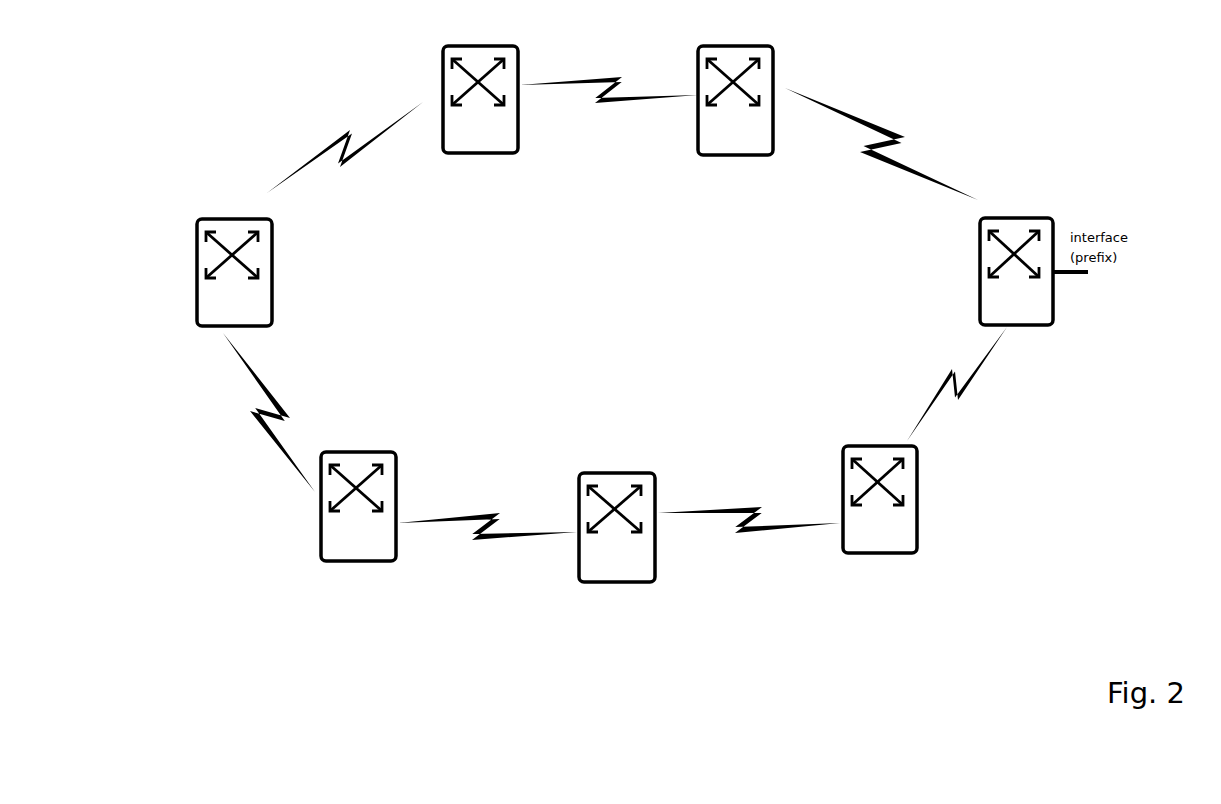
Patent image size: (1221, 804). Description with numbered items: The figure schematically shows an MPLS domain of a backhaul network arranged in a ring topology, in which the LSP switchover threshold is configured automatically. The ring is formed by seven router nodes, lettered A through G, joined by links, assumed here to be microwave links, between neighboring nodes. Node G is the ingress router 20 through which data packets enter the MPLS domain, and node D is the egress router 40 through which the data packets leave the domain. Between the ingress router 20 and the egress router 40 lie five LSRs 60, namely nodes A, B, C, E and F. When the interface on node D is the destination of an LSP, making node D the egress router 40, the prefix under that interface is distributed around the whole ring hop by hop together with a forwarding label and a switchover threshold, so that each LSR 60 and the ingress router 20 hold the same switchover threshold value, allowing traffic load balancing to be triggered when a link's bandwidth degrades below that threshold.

The ingress router 20 is at (318, 518).
The egress router 40 is at (1035, 214).
The label switching routers (LSRs) 60 is at (195, 232).